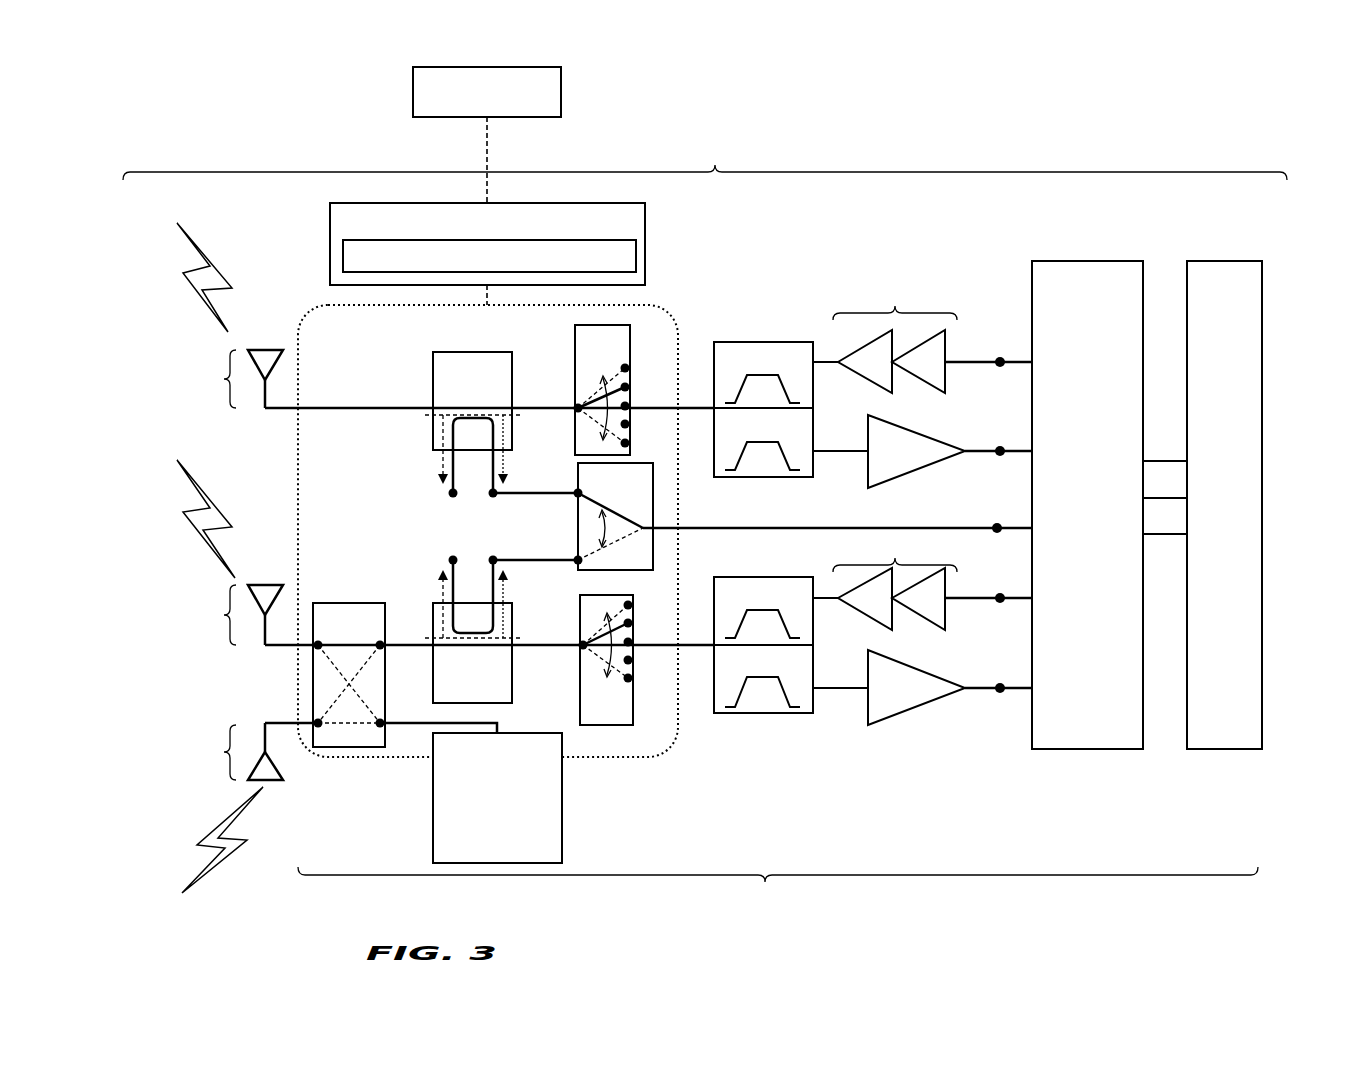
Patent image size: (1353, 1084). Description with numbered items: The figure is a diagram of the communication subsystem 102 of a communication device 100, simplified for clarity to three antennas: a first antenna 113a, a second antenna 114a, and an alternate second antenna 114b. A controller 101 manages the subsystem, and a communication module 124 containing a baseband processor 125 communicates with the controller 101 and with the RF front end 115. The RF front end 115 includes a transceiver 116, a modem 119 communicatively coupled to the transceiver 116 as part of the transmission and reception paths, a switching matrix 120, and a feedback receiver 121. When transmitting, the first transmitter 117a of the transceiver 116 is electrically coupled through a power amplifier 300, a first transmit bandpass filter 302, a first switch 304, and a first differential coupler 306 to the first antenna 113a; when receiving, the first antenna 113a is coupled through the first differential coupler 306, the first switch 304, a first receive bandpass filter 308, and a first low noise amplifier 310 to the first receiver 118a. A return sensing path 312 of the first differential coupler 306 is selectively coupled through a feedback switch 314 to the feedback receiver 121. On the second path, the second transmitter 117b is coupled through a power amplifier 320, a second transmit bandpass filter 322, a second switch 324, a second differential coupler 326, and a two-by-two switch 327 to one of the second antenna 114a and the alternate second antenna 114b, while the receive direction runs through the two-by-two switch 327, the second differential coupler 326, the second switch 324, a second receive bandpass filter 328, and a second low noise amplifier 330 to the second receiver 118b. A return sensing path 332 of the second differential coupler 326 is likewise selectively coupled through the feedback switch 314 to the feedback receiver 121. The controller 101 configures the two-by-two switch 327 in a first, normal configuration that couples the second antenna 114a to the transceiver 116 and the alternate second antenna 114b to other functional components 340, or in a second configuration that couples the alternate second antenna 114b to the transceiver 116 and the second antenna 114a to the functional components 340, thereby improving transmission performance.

The communication device 100 is at (221, 85).
The controller 101 is at (548, 101).
The communication subsystem 102 is at (705, 144).
The first antenna 113a is at (211, 375).
The second antenna 114a is at (200, 613).
The alternate second antenna 114b is at (207, 749).
The RF front end 115 is at (778, 905).
The transceiver 116 is at (1105, 320).
The first transmitter 117a is at (1001, 356).
The second transmitter 117b is at (1001, 592).
The first receiver 118a is at (1001, 445).
The second receiver 118b is at (1001, 682).
The modem 119 is at (1241, 320).
The switching matrix 120 is at (528, 338).
The feedback receiver 121 is at (998, 522).
The communication module 124 is at (612, 233).
The baseband processor 125 is at (603, 265).
The power amplifier 300 is at (889, 323).
The first transmit bandpass filter 302 is at (805, 368).
The first switch 304 is at (618, 350).
The first differential coupler 306 is at (488, 401).
The first receive bandpass filter 308 is at (805, 436).
The first low noise amplifier 310 is at (908, 473).
The return sensing path 312 is at (494, 470).
The feedback switch 314 is at (622, 486).
The power amplifier 320 is at (885, 581).
The second transmit bandpass filter 322 is at (805, 601).
The second switch 324 is at (622, 721).
The second differential coupler 326 is at (488, 700).
The two-by-two switch 327 is at (367, 628).
The second receive bandpass filter 328 is at (805, 670).
The second low noise amplifier 330 is at (908, 711).
The return sensing path 332 is at (492, 583).
The functional components 340 is at (512, 853).